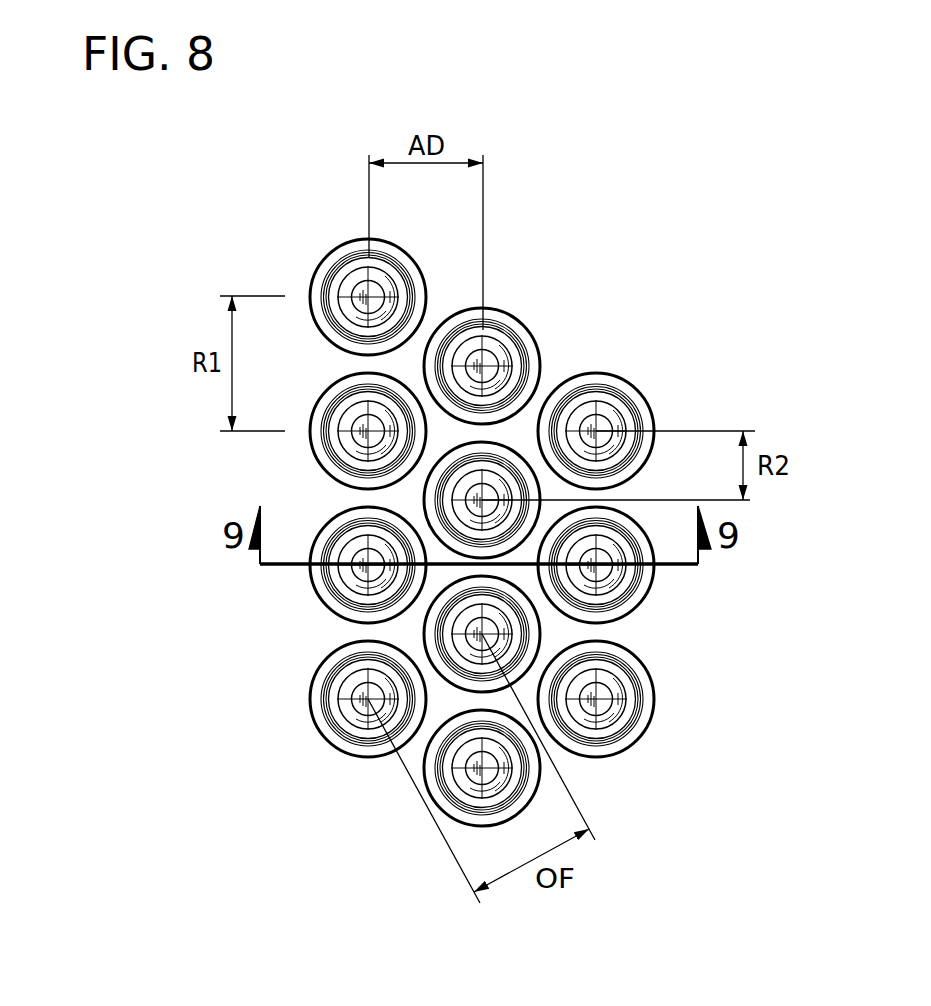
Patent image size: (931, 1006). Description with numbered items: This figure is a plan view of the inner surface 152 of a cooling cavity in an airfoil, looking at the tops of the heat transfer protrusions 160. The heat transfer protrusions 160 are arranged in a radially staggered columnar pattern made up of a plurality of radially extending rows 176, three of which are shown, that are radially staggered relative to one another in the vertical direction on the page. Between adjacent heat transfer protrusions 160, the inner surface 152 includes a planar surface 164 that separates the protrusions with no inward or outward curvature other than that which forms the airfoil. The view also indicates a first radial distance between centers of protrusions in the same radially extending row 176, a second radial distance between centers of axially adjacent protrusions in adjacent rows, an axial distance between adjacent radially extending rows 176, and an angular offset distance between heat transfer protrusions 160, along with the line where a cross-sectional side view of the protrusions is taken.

The inner surface 152 is at (167, 502).
The heat transfer protrusion 160 is at (305, 700).
The planar surface 164 is at (362, 632).
The radially extending row 176 is at (342, 238).